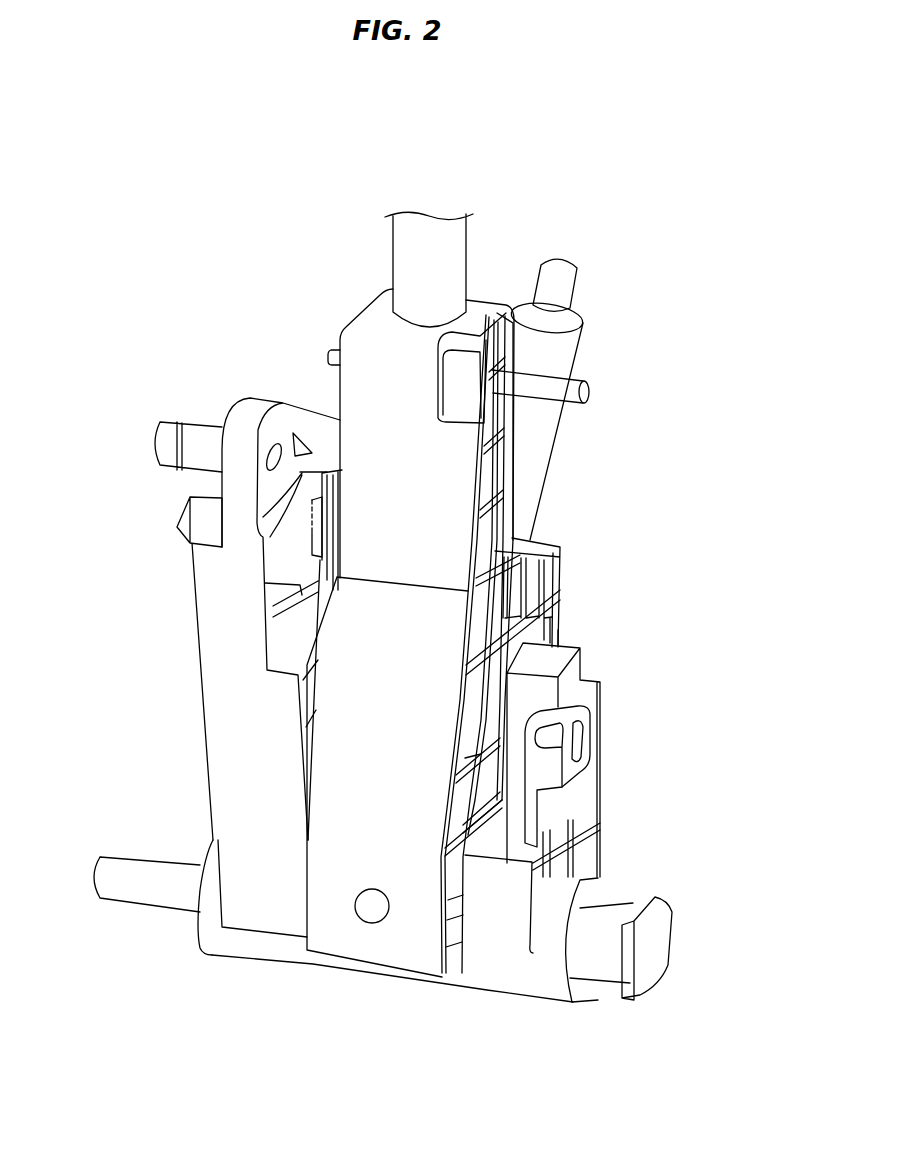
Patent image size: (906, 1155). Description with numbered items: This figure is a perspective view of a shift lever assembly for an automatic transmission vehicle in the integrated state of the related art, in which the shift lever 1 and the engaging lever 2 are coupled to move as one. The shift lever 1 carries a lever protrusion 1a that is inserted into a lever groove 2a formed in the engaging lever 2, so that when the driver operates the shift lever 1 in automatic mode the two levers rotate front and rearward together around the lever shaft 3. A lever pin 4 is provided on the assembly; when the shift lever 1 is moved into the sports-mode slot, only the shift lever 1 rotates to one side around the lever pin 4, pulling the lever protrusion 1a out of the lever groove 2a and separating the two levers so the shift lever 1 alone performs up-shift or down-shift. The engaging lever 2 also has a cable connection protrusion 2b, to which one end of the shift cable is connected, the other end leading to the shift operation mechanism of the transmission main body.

The shift lever 1 is at (552, 593).
The lever protrusion 1a is at (310, 537).
The engaging lever 2 is at (222, 705).
The lever groove 2a is at (336, 495).
The cable connection protrusion 2b is at (160, 437).
The lever shaft 3 is at (658, 936).
The lever pin 4 is at (371, 912).